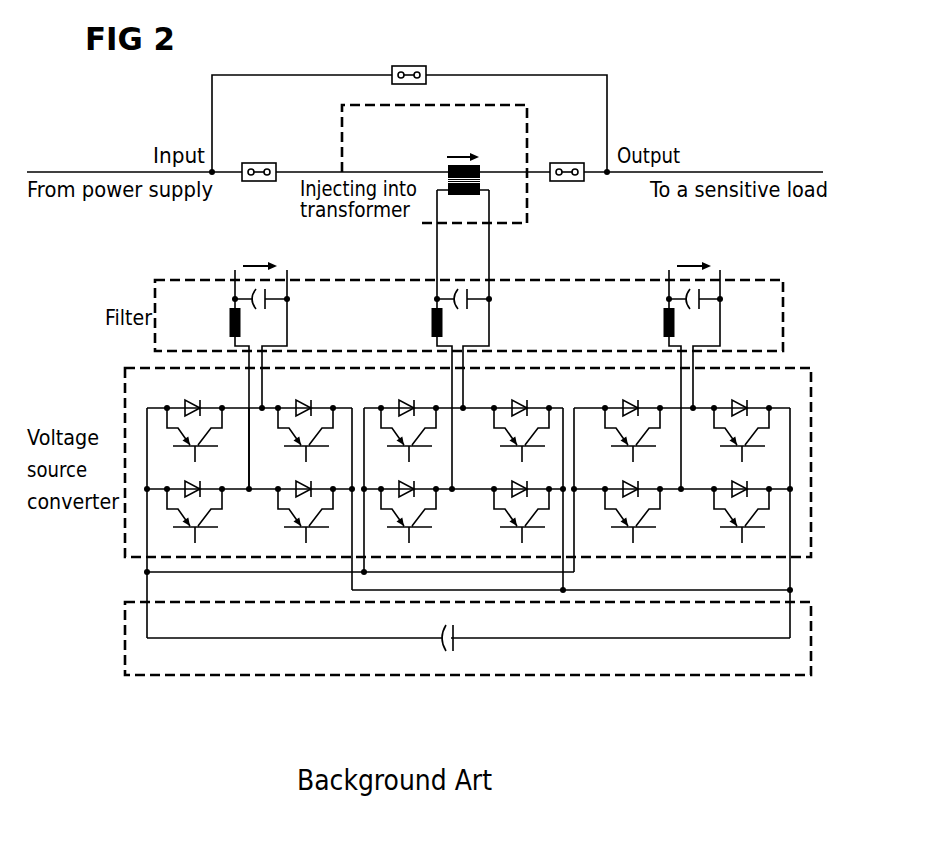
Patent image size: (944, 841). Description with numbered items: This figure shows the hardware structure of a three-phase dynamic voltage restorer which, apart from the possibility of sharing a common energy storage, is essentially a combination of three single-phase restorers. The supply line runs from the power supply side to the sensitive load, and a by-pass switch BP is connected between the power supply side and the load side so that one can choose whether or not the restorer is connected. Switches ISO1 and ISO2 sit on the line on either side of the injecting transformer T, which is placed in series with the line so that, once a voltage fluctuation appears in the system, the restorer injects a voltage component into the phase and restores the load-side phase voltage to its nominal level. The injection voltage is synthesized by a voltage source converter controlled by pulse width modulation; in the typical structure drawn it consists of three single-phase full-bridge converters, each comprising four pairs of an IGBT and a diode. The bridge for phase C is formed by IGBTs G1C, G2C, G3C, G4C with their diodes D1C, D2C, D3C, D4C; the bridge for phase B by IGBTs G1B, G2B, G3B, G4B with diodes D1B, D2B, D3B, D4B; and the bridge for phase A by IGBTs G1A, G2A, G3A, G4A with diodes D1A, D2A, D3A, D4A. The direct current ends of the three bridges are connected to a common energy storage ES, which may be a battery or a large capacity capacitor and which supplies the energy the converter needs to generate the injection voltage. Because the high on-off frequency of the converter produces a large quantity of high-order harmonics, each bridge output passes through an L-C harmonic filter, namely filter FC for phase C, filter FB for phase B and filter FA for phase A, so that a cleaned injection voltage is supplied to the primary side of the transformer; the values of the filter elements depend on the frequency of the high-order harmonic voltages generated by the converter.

The by-pass switch BP is at (411, 60).
The input isolation switch ISO1 is at (260, 161).
The output isolation switch ISO2 is at (568, 161).
The isolation transformer T is at (459, 157).
The harmonic filter FC is at (253, 359).
The harmonic filter FB is at (454, 339).
The harmonic filter FA is at (687, 359).
The diode D1C is at (201, 397).
The diode D2C is at (312, 397).
The diode D3C is at (201, 478).
The diode D4C is at (312, 478).
The diode D1B is at (415, 397).
The diode D2B is at (528, 397).
The diode D3B is at (415, 478).
The diode D4B is at (528, 478).
The diode D1A is at (639, 397).
The diode D2A is at (748, 397).
The diode D3A is at (639, 478).
The diode D4A is at (748, 478).
The IGBT G1C is at (187, 439).
The IGBT G2C is at (298, 439).
The IGBT G3C is at (187, 520).
The IGBT G4C is at (298, 520).
The IGBT G1B is at (401, 439).
The IGBT G2B is at (514, 439).
The IGBT G3B is at (401, 520).
The IGBT G4B is at (514, 520).
The IGBT G1A is at (625, 439).
The IGBT G2A is at (734, 439).
The IGBT G3A is at (625, 520).
The IGBT G4A is at (734, 520).
The energy storage ES is at (240, 643).